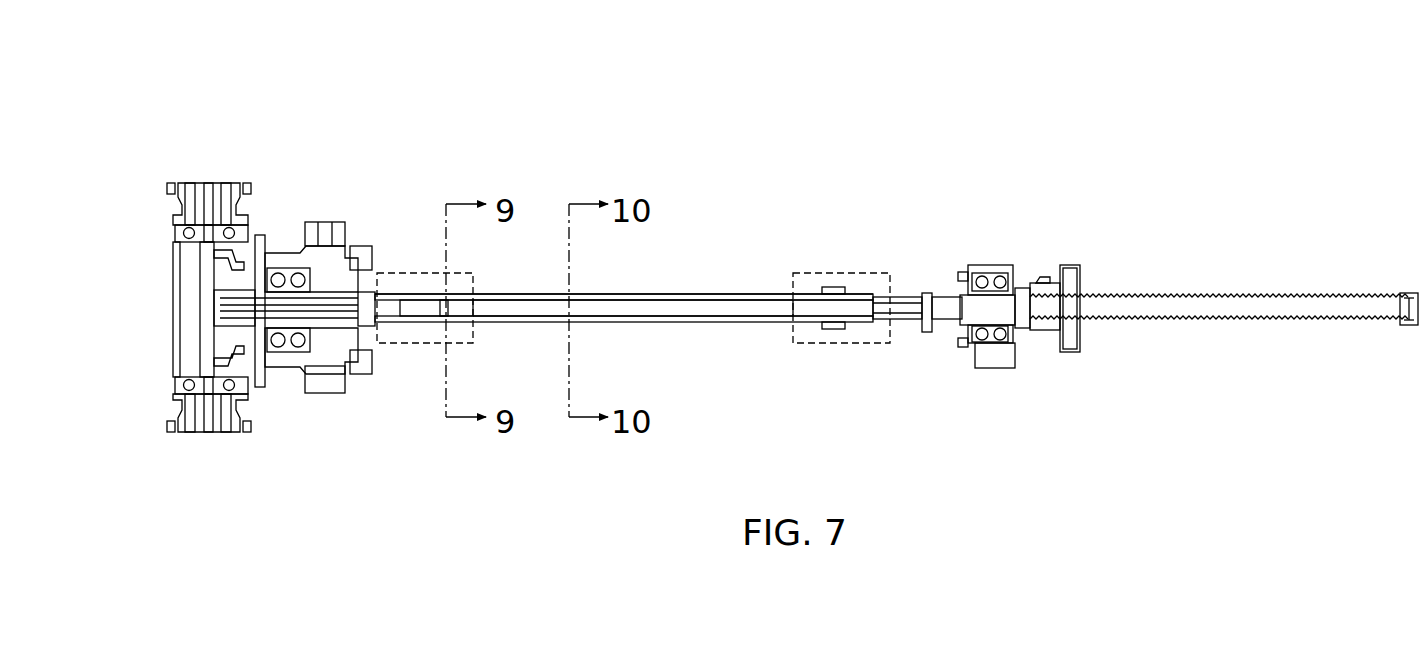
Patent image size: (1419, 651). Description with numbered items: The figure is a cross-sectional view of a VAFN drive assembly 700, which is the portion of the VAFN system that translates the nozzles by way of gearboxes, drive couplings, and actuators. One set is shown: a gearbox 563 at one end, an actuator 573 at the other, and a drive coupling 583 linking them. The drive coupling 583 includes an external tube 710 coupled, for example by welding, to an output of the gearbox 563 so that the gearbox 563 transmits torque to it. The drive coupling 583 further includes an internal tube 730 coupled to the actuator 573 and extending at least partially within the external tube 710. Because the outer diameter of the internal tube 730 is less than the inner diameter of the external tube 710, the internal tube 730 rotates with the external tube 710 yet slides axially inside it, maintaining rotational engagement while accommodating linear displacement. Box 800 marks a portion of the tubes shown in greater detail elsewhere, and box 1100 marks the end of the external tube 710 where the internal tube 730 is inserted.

The VAFN drive assembly 700 is at (384, 124).
The gearbox 563 is at (237, 446).
The drive coupling 583 is at (685, 290).
The external tube 710 is at (748, 323).
The box 800 is at (420, 344).
The box 1100 is at (840, 345).
The internal tube 730 is at (900, 294).
The actuator 573 is at (995, 256).